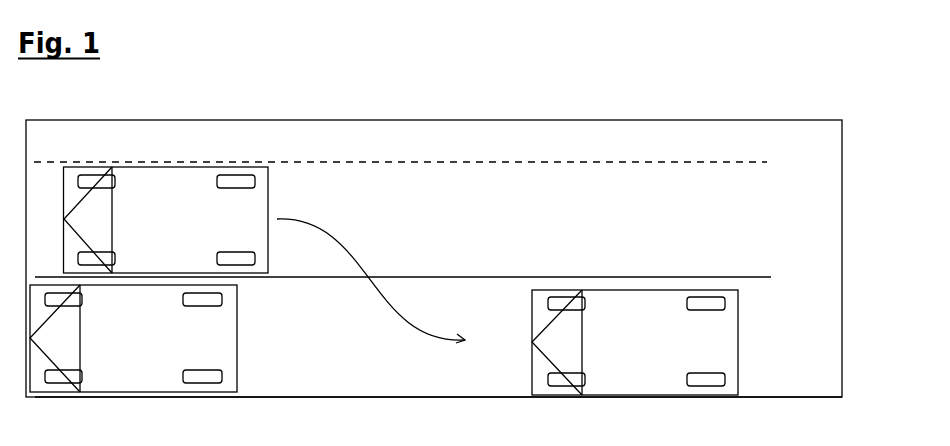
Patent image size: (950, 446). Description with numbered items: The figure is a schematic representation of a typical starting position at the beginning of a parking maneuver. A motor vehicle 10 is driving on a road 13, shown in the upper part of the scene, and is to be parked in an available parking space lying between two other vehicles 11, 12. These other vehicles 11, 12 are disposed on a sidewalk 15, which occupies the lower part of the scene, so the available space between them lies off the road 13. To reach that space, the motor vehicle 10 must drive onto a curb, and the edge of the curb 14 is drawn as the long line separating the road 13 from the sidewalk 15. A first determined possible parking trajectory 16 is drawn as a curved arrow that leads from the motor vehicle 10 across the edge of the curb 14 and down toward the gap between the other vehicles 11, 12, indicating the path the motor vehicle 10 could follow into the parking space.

The motor vehicle 10 is at (165, 227).
The other vehicle 11 is at (126, 352).
The other vehicle 12 is at (651, 344).
The road 13 is at (655, 218).
The edge of the curb 14 is at (771, 277).
The sidewalk 15 is at (769, 344).
The first determined possible parking trajectory 16 is at (397, 317).